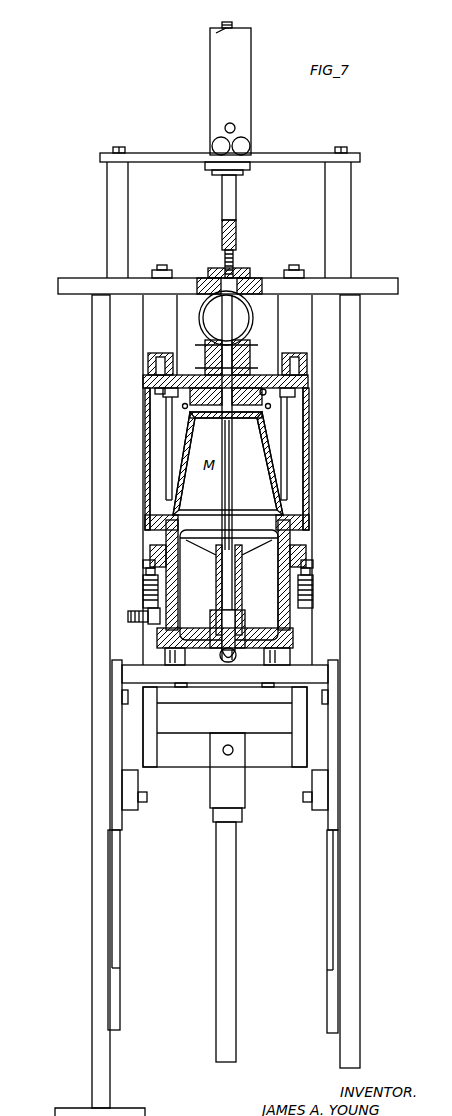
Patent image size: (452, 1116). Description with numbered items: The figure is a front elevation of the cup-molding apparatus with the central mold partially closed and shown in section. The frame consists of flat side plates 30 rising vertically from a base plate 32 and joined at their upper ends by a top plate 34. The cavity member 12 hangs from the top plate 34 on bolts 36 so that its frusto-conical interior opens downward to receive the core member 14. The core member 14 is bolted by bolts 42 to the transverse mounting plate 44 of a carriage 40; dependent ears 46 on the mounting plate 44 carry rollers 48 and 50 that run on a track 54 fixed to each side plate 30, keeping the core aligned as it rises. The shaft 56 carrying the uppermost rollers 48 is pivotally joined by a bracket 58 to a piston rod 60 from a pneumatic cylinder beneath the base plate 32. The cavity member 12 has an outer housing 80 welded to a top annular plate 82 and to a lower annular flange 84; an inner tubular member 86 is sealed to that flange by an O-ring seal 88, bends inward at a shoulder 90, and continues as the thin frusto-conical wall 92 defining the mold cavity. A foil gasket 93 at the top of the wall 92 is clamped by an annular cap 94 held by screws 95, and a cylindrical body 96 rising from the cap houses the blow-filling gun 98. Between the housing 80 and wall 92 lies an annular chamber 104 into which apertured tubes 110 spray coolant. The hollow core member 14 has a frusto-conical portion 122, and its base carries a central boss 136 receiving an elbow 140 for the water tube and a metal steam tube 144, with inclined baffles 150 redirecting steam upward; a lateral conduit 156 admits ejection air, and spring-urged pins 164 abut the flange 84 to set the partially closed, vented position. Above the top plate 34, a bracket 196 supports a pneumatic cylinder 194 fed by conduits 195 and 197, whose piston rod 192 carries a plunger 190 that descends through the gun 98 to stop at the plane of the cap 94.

The cavity member 12 is at (128, 467).
The core member 14 is at (326, 642).
The side plates 30 is at (92, 888).
The base plate 32 is at (66, 1108).
The top plate 34 is at (70, 292).
The bolts 36 is at (168, 270).
The carriage 40 is at (258, 777).
The bolts 42 is at (170, 662).
The mounting plate 44 is at (328, 677).
The dependent ears 46 is at (143, 747).
The uppermost rollers 48 is at (112, 700).
The lowermost rollers 50 is at (122, 797).
The track 54 is at (112, 840).
The shaft 56 is at (256, 710).
The bracket 58 is at (205, 774).
The piston rod 60 is at (216, 914).
The outer housing 80 is at (150, 402).
The top annular plate 82 is at (143, 381).
The annular flange 84 is at (143, 562).
The inner tubular member 86 is at (166, 530).
The O-ring seal 88 is at (150, 548).
The shoulder 90 is at (160, 518).
The frusto-conical wall 92 is at (178, 490).
The gasket 93 is at (185, 406).
The annular cap 94 is at (163, 393).
The screws 95 is at (162, 388).
The cylindrical body 96 is at (255, 358).
The blow-filling gun 98 is at (272, 344).
The annular chamber 104 is at (300, 467).
The apertured tubes 110 is at (145, 432).
The frusto-conical portion 122 is at (236, 507).
The central boss 136 is at (240, 622).
The elbow 140 is at (236, 660).
The metal tube 144 is at (218, 588).
The inclined baffles 150 is at (210, 565).
The lateral conduit 156 is at (128, 617).
The pins 164 is at (150, 572).
The plunger 190 is at (230, 316).
The piston rod 192 is at (238, 214).
The pneumatic cylinder 194 is at (246, 112).
The conduit 195 is at (216, 33).
The bracket 196 is at (148, 152).
The conduit 197 is at (236, 128).